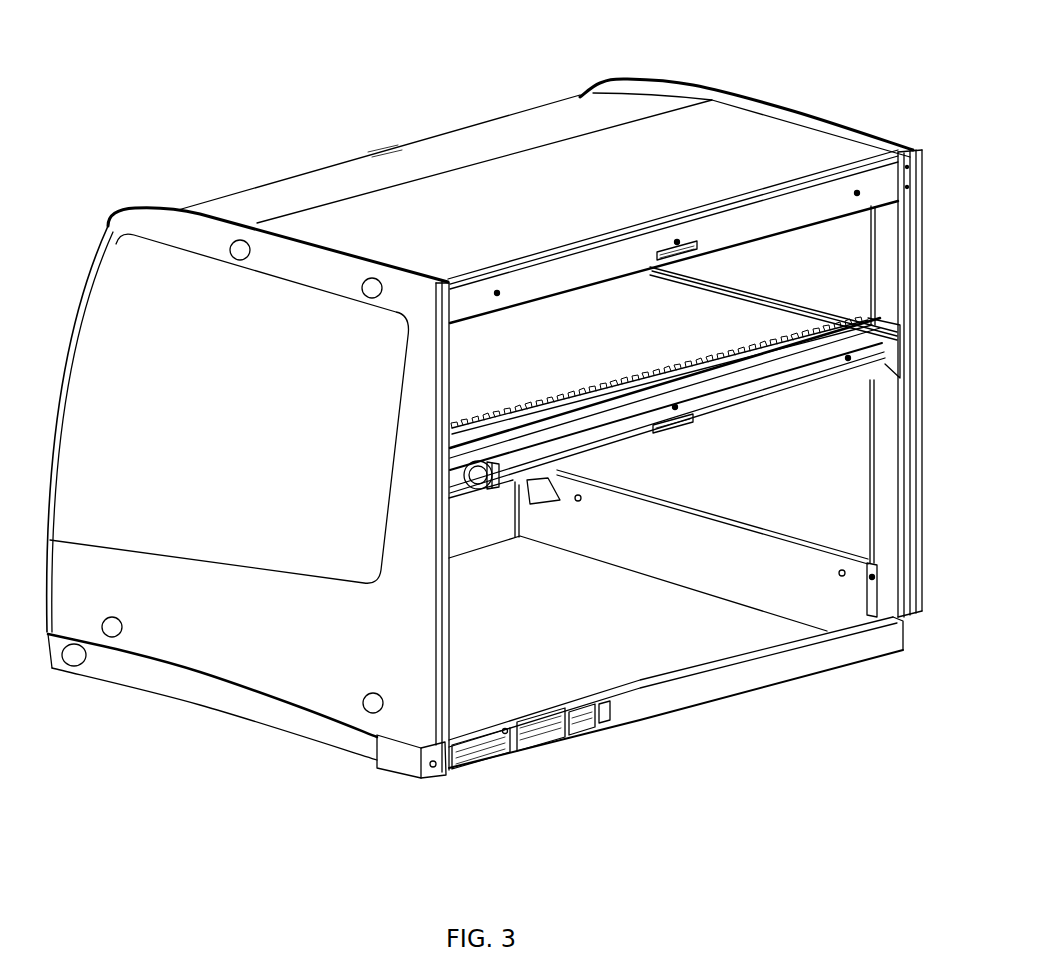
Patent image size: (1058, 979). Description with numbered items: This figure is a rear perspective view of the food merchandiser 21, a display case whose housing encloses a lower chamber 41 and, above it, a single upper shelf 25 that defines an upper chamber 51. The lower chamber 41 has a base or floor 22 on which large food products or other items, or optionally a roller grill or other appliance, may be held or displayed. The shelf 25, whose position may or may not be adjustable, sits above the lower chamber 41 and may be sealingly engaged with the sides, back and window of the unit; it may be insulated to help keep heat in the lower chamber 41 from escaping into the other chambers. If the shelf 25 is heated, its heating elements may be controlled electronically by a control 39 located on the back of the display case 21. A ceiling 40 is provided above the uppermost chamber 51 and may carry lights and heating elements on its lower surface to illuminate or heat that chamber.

The food merchandiser 21 is at (477, 80).
The base or floor 22 is at (637, 650).
The shelf 25 is at (757, 375).
The control 39 is at (490, 463).
The ceiling 40 is at (568, 293).
The lower chamber 41 is at (838, 458).
The upper chamber 51 is at (845, 264).